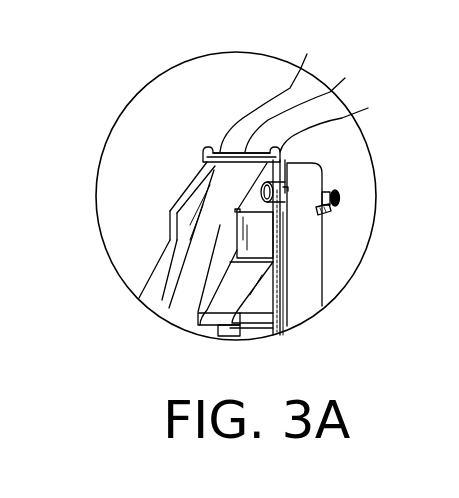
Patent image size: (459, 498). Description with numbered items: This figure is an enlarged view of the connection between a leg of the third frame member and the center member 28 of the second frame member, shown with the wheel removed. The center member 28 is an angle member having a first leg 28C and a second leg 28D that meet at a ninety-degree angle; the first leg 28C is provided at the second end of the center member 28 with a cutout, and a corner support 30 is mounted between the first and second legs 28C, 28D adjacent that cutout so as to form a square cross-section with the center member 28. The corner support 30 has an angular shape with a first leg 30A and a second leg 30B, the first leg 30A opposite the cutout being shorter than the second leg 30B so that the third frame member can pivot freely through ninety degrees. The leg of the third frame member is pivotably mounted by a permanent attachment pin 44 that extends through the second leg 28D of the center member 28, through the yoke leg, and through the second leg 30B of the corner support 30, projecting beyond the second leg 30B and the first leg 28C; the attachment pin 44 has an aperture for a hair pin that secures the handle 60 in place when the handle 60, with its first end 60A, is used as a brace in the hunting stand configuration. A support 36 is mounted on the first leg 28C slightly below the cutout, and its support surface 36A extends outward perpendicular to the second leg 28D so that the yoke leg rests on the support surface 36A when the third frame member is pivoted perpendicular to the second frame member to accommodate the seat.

The center member 28 is at (202, 164).
The first leg 28C is at (263, 240).
The second leg 28D is at (172, 204).
The corner support 30 is at (310, 107).
The first leg 30A is at (286, 90).
The second leg 30B is at (347, 122).
The support 36 is at (240, 293).
The support surface 36A is at (222, 318).
The attachment pin 44 is at (323, 170).
The handle 60 is at (307, 300).
The first end 60A is at (310, 222).